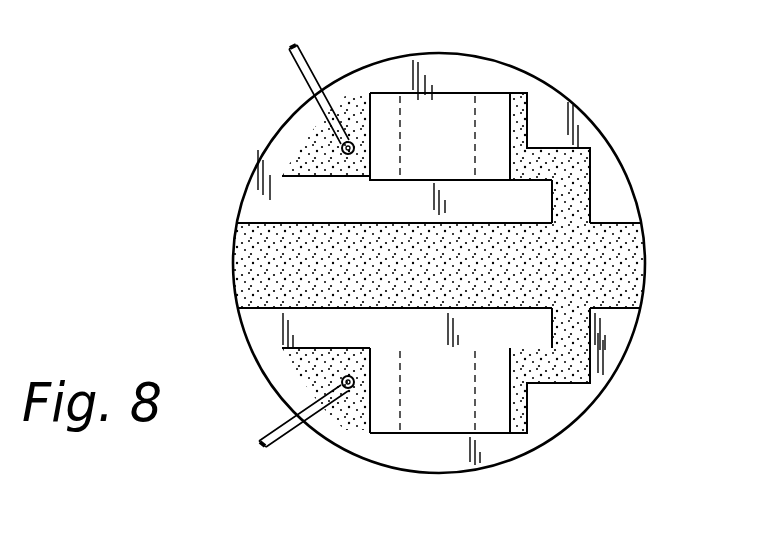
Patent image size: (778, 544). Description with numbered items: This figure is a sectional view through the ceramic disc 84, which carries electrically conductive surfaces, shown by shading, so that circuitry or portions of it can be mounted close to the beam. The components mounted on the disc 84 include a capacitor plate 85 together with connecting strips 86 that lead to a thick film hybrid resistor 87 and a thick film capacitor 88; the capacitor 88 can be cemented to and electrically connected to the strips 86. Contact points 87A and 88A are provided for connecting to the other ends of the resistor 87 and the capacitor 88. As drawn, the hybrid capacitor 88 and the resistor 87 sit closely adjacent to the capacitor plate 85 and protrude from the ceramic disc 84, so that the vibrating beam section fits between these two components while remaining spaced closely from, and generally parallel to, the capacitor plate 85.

The ceramic disc 84 is at (548, 108).
The capacitor plate 85 is at (258, 300).
The connecting strips 86 is at (580, 163).
The thick film hybrid resistor 87 is at (490, 415).
The contact point 87A is at (312, 380).
The thick film capacitor 88 is at (498, 92).
The contact point 88A is at (317, 147).